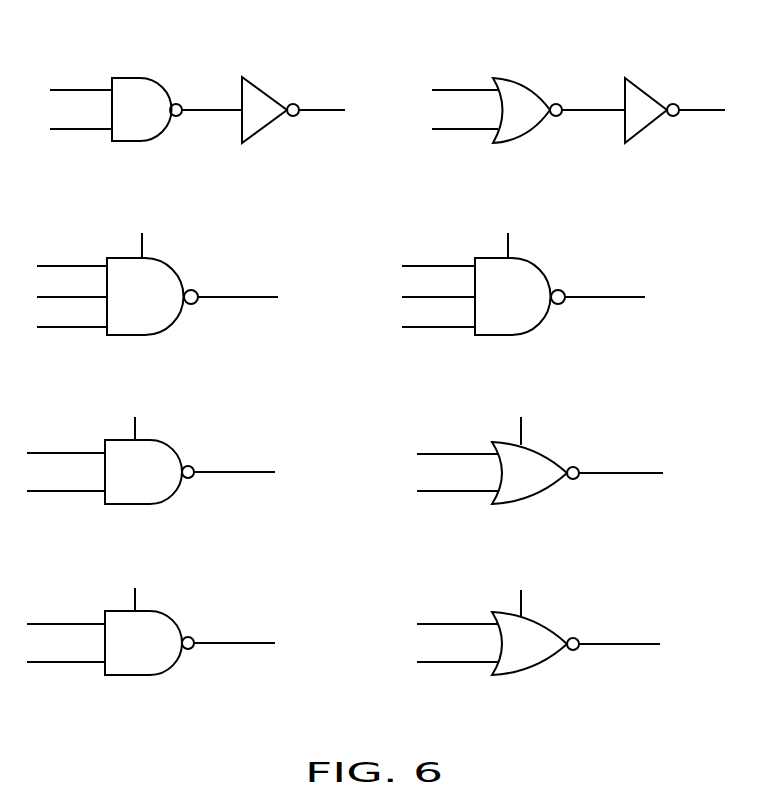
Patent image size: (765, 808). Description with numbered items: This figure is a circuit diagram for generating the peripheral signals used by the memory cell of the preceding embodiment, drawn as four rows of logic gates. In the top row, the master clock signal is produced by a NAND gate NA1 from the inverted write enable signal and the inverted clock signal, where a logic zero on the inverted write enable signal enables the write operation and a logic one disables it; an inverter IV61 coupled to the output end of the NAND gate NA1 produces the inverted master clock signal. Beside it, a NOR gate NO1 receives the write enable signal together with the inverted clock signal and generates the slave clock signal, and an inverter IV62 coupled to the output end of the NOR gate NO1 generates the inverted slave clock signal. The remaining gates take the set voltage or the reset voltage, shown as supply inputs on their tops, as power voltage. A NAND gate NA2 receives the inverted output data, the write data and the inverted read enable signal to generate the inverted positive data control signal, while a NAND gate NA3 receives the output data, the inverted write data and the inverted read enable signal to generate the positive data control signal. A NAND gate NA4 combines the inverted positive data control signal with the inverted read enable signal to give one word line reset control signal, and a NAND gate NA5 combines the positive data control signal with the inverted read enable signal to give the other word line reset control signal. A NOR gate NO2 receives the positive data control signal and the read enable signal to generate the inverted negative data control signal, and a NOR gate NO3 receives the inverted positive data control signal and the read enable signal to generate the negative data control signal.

The NAND gate NA1 is at (135, 78).
The inverter IV61 is at (265, 85).
The NOR gate NO1 is at (518, 78).
The inverter IV62 is at (647, 85).
The NAND gate NA2 is at (172, 265).
The NAND gate NA3 is at (538, 265).
The NAND gate NA4 is at (170, 447).
The NOR gate NO2 is at (542, 453).
The NAND gate NA5 is at (170, 618).
The NOR gate NO3 is at (542, 623).